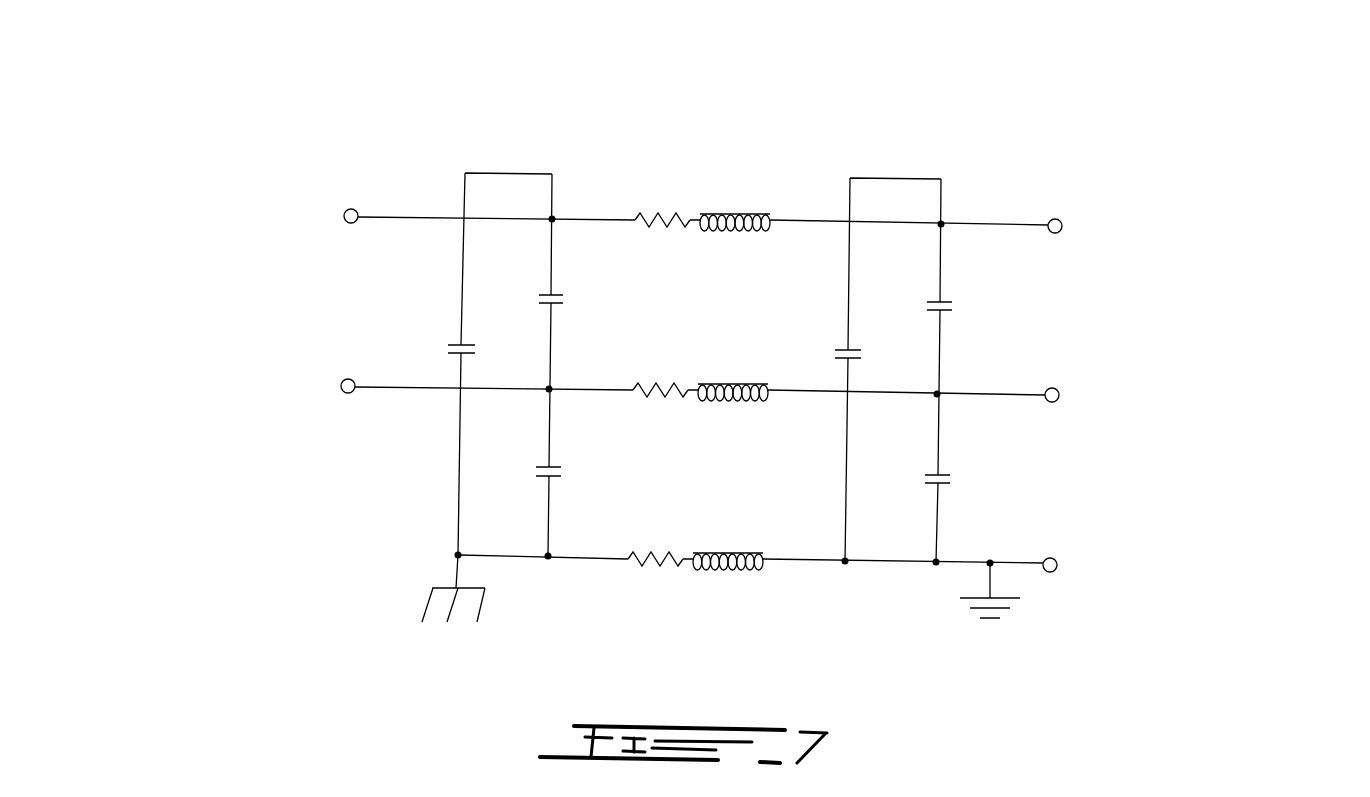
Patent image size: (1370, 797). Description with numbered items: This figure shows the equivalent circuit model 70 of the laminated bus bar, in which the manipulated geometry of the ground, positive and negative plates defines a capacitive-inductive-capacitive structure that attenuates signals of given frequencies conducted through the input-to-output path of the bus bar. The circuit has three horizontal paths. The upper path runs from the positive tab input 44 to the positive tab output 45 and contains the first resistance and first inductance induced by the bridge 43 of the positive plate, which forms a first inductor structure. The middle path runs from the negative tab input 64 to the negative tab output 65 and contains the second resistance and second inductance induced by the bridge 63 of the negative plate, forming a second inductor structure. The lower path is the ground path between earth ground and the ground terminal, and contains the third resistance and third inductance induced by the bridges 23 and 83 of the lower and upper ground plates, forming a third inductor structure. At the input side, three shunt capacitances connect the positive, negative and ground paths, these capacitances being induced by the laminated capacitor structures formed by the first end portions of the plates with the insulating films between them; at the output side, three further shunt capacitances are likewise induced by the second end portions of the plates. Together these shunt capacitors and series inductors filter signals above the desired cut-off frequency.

The equivalent circuit model 70 is at (716, 112).
The positive tab input 44 is at (213, 211).
The negative tab input 64 is at (211, 375).
The positive tab output 45 is at (1207, 225).
The negative tab output 65 is at (1205, 393).
The bridge 43 is at (720, 224).
The bridge 63 is at (719, 394).
The bridge 23 is at (687, 590).
The bridge 83 is at (687, 590).